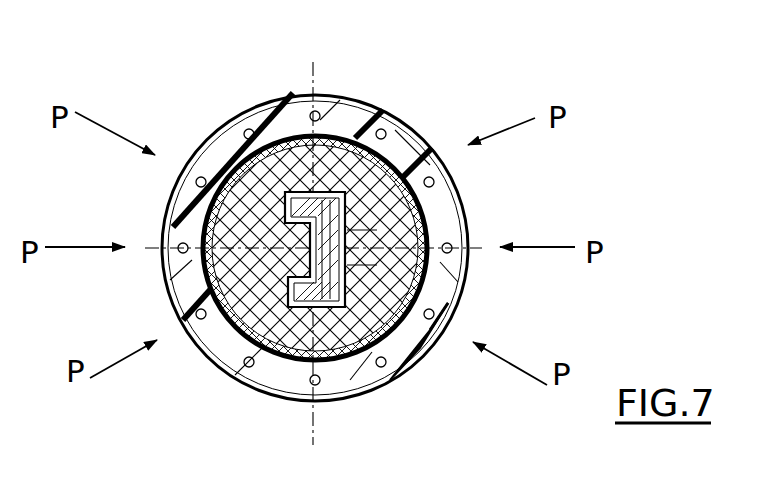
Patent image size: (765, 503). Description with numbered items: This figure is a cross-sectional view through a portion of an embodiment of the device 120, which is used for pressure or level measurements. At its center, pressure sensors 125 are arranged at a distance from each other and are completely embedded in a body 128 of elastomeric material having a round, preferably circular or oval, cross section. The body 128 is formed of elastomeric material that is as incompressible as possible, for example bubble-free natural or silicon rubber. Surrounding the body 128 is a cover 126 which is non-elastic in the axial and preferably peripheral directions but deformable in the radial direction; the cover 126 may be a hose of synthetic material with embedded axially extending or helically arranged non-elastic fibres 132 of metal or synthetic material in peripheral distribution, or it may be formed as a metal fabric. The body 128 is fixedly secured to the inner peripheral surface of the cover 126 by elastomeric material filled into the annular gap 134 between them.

The device 120 is at (428, 110).
The pressure sensors 125 is at (278, 238).
The cover 126 is at (213, 165).
The body 128 is at (348, 142).
The non-elastic fibres 132 is at (200, 320).
The annular gap 134 is at (440, 290).